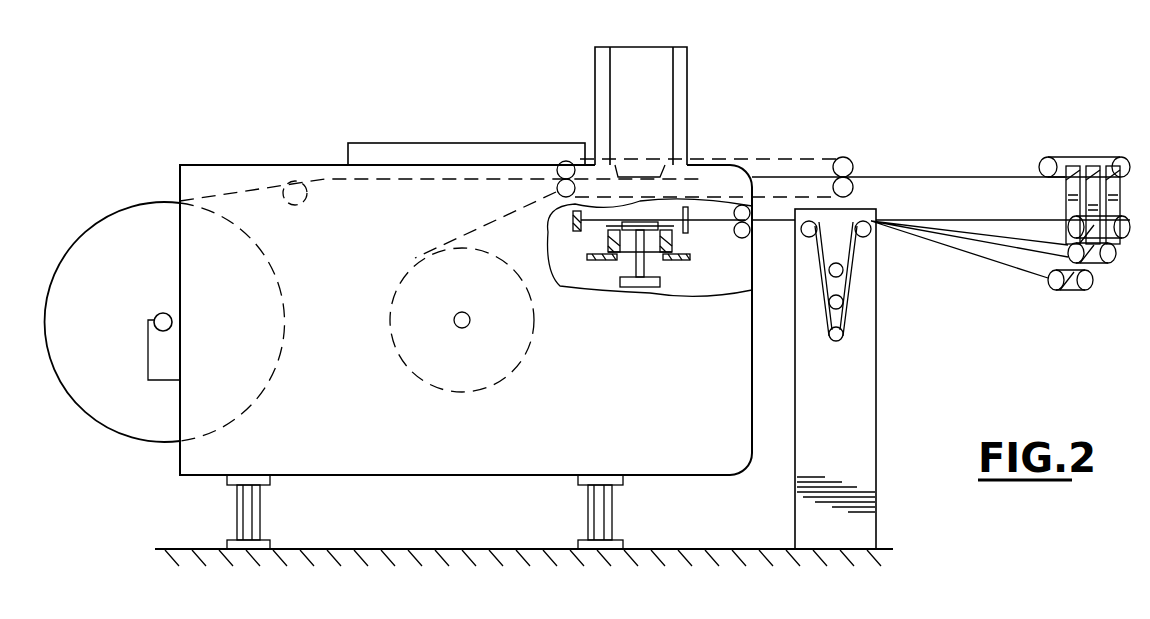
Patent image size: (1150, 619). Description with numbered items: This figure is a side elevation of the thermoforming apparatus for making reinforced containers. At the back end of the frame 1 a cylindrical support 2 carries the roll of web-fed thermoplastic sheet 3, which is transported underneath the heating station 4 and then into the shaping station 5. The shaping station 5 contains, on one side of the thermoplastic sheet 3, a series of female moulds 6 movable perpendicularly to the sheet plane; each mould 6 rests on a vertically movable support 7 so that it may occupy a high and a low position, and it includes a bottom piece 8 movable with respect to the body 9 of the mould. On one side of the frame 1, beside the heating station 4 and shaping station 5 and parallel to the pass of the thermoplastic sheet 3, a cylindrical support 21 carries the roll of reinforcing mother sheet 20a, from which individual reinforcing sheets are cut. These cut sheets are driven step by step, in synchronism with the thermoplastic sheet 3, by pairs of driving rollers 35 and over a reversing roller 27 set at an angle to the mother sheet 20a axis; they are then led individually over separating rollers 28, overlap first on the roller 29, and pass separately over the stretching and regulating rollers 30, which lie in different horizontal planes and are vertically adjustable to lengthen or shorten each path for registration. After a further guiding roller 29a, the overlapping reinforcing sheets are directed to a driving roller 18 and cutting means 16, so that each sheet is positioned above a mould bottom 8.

The frame 1 is at (528, 357).
The cylindrical support 2 is at (162, 312).
The thermoplastic sheet 3 is at (178, 200).
The heating station 4 is at (432, 152).
The shaping station 5 is at (709, 89).
The female mould 6 is at (694, 247).
The support 7 is at (677, 261).
The bottom piece of the mould 8 is at (649, 236).
The body of the mould 9 is at (626, 266).
The cutting means 16 is at (698, 211).
The driving roller 18 is at (741, 238).
The reinforcing mother sheet 20a is at (393, 352).
The cylindrical support 21 is at (458, 330).
The reversing roller 27 is at (1047, 162).
The separating rollers 28 is at (1130, 240).
The roller 29 is at (870, 236).
The guiding roller 29a is at (801, 232).
The stretching and regulating rollers 30 is at (836, 341).
The driving rollers 35 is at (566, 160).